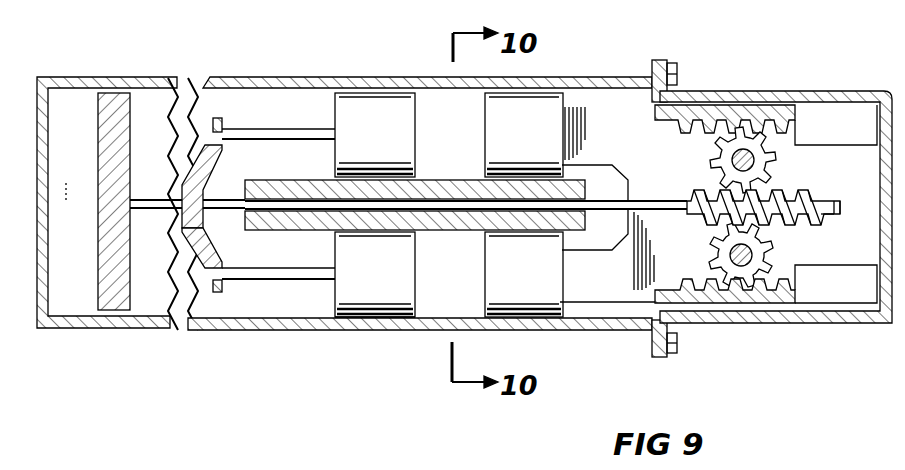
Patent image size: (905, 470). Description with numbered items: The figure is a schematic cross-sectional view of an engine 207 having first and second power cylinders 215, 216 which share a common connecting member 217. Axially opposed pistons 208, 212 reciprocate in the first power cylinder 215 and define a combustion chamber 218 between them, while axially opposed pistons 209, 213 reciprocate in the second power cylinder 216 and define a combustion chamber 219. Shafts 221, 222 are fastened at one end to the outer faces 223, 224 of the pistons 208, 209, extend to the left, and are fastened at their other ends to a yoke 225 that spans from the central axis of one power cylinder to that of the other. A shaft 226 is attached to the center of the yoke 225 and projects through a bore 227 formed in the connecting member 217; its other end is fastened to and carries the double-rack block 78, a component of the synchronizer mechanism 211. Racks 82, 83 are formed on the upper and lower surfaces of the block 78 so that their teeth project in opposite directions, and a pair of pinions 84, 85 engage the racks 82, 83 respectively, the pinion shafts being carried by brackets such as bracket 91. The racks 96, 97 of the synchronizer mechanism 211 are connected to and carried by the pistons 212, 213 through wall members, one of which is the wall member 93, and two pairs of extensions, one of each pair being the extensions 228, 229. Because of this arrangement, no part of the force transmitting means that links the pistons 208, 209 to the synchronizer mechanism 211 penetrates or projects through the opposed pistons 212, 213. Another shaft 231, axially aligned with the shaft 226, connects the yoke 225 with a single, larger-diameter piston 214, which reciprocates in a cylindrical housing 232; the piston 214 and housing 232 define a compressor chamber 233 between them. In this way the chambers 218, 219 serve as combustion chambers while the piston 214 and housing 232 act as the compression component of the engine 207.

The engine 207 is at (141, 195).
The cylindrical housing 232 is at (78, 330).
The compressor chamber 233 is at (96, 236).
The piston 214 is at (130, 102).
The shaft 231 is at (142, 199).
The first power cylinder 215 is at (440, 107).
The second power cylinder 216 is at (432, 311).
The piston 208 is at (360, 100).
The piston 212 is at (541, 100).
The piston 209 is at (400, 295).
The piston 213 is at (538, 296).
The combustion chamber 218 is at (471, 134).
The combustion chamber 219 is at (471, 288).
The connecting member 217 is at (478, 232).
The shaft 221 is at (316, 107).
The shaft 222 is at (250, 282).
The outer face 223 is at (336, 166).
The outer face 224 is at (338, 313).
The yoke 225 is at (231, 112).
The shaft 226 is at (240, 196).
The bore 227 is at (262, 200).
The extension 228 is at (630, 165).
The extension 229 is at (620, 275).
The wall member 93 is at (633, 291).
The synchronizer mechanism 211 is at (773, 189).
The rack 96 is at (779, 115).
The rack 97 is at (770, 301).
The bracket 91 is at (843, 151).
The pinion 84 is at (712, 165).
The pinion 85 is at (772, 274).
The rack 82 is at (803, 191).
The block 78 is at (838, 200).
The rack 83 is at (836, 222).